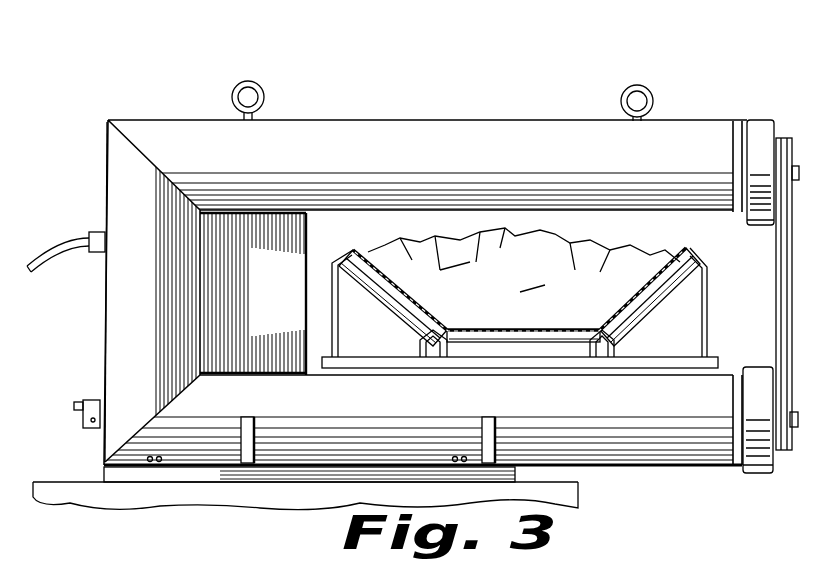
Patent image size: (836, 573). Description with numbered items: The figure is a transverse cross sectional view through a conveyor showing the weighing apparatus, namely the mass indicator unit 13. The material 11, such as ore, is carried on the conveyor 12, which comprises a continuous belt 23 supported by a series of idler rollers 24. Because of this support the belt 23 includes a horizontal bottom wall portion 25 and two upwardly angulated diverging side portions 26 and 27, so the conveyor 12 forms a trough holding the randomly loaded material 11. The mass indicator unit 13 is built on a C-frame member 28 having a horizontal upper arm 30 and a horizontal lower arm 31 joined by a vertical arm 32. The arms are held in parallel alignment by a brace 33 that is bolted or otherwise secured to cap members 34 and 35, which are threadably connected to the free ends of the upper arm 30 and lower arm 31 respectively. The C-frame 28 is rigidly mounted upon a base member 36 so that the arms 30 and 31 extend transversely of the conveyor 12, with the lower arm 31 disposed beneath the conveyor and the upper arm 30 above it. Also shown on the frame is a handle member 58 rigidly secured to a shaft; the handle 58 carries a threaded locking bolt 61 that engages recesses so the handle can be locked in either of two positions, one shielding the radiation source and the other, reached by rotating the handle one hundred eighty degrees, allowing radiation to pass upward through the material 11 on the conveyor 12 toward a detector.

The material 11 is at (524, 263).
The conveyor 12 is at (643, 318).
The mass indicator unit 13 is at (152, 100).
The continuous belt 23 is at (632, 285).
The idler rollers 24 is at (407, 322).
The horizontal bottom wall portion 25 is at (548, 348).
The upwardly angulated diverging side portion 26 is at (664, 278).
The upwardly angulated diverging side portion 27 is at (386, 296).
The C-frame member 28 is at (112, 172).
The horizontal upper arm 30 is at (362, 138).
The horizontal lower arm 31 is at (663, 440).
The vertical arm 32 is at (118, 305).
The brace 33 is at (789, 262).
The cap member 34 is at (770, 128).
The cap member 35 is at (752, 461).
The base member 36 is at (176, 470).
The handle member 58 is at (88, 425).
The threaded locking bolt 61 is at (68, 407).